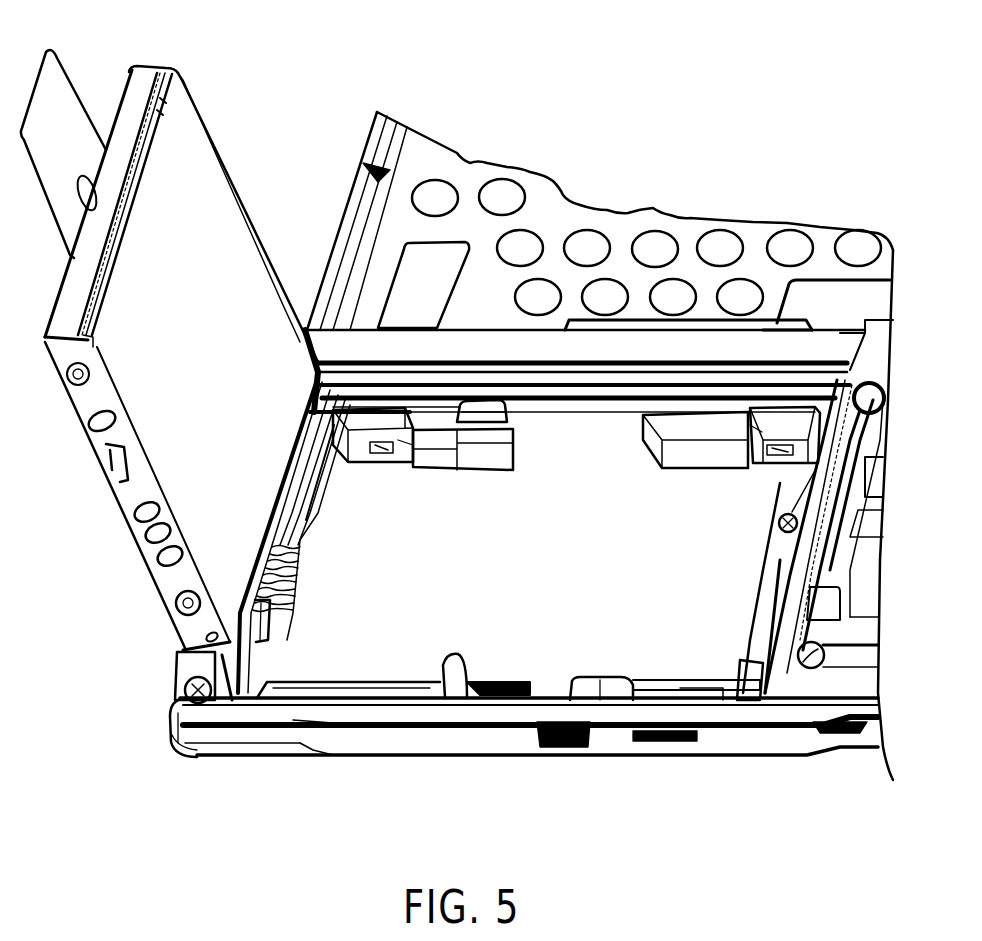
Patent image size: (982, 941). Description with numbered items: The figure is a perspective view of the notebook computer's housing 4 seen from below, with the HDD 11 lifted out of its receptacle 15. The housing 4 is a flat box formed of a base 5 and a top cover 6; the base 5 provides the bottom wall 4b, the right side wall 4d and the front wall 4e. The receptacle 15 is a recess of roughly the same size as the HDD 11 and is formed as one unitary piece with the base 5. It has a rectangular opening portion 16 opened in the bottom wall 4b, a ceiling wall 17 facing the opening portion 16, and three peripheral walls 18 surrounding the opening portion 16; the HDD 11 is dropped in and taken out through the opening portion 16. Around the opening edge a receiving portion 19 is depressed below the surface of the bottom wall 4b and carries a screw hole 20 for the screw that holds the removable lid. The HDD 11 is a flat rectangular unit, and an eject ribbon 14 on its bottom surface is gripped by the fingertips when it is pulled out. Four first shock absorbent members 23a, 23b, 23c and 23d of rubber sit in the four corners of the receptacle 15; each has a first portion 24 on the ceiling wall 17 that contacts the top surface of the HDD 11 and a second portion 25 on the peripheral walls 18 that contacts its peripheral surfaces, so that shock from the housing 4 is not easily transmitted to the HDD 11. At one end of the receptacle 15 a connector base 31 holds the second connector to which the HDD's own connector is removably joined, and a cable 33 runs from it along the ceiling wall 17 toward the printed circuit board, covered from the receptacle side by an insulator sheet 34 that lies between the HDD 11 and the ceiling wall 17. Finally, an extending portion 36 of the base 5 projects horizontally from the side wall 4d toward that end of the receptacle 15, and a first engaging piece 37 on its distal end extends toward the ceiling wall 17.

The housing 4 is at (337, 826).
The bottom wall 4b is at (480, 353).
The right side wall 4d is at (180, 660).
The front wall 4e is at (503, 740).
The base 5 is at (260, 730).
The top cover 6 is at (323, 750).
The HDD 11 is at (183, 430).
The eject ribbon 14 is at (107, 150).
The receptacle 15 is at (530, 597).
The opening portion 16 is at (757, 660).
The ceiling wall 17 is at (447, 460).
The peripheral walls 18 is at (500, 423).
The receiving portion 19 is at (597, 383).
The screw hole 20 is at (780, 513).
The first shock absorbent member 23a is at (390, 463).
The first shock absorbent member 23b is at (770, 475).
The first shock absorbent member 23c is at (687, 690).
The first shock absorbent member 23d is at (310, 688).
The first portion 24 is at (355, 455).
The second portion 25 is at (397, 445).
The connector base 31 is at (310, 528).
The cable 33 is at (300, 582).
The insulator sheet 34 is at (613, 663).
The extending portion 36 is at (193, 753).
The first engaging piece 37 is at (262, 657).